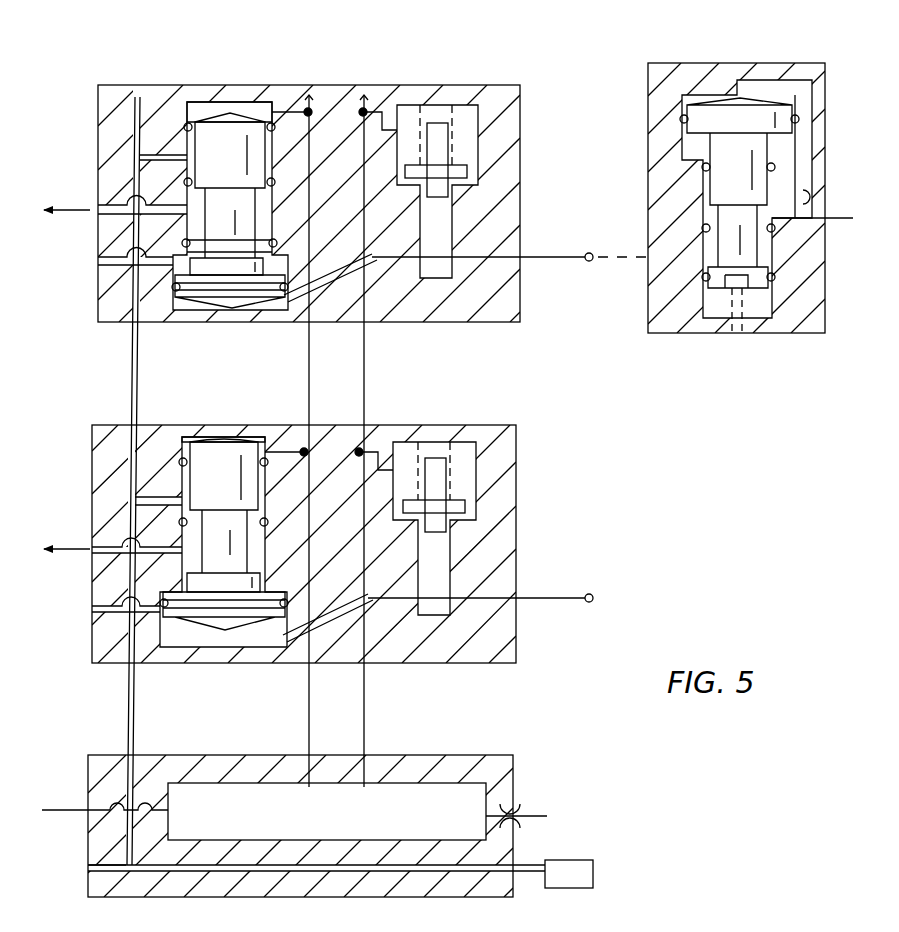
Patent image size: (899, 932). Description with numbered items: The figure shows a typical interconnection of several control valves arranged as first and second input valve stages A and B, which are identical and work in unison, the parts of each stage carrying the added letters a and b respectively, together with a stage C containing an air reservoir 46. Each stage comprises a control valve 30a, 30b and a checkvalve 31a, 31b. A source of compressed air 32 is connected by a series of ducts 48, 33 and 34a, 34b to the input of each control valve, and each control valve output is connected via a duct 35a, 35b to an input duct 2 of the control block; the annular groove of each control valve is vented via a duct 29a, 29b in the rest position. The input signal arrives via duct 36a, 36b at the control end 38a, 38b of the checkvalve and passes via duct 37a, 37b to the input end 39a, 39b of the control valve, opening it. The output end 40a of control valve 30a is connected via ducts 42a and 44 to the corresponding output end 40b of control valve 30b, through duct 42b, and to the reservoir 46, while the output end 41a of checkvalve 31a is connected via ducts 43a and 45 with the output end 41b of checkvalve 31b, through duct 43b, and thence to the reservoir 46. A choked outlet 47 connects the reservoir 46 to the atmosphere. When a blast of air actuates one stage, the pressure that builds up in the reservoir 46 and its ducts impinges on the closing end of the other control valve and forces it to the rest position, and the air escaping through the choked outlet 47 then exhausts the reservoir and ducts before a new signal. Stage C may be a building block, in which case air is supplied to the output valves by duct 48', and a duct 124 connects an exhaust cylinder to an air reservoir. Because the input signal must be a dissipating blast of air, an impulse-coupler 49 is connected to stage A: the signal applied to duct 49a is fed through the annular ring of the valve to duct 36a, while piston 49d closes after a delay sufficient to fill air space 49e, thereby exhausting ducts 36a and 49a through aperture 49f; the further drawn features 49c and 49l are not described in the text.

The input duct 2 is at (80, 208).
The vent duct 29a is at (102, 266).
The vent duct 29b is at (100, 611).
The control valve 30a is at (214, 192).
The control valve 30b is at (220, 540).
The checkvalve 31a is at (450, 192).
The checkvalve 31b is at (447, 534).
The source of compressed air 32 is at (565, 860).
The duct 33 is at (134, 118).
The duct 34a is at (168, 152).
The duct 34b is at (165, 495).
The output duct 35a is at (160, 205).
The output duct 35b is at (158, 545).
The input signal duct 36a is at (560, 258).
The input signal duct 36b is at (552, 598).
The duct 37a is at (320, 300).
The duct 37b is at (318, 655).
The control end of checkvalve 38a is at (432, 278).
The control end of checkvalve 38b is at (432, 655).
The input end of control valve 39a is at (190, 308).
The opening end of control valve 39b is at (188, 648).
The output end of control valve 40a is at (208, 105).
The output end of control valve 40b is at (232, 442).
The output end of checkvalve 41a is at (470, 120).
The output end of checkvalve 41b is at (470, 455).
The duct 42a is at (262, 110).
The duct 42b is at (283, 420).
The duct 43a is at (382, 112).
The duct 43b is at (378, 450).
The duct 44 is at (312, 140).
The duct 45 is at (360, 140).
The air reservoir 46 is at (327, 811).
The choked outlet 47 is at (498, 812).
The duct 48 is at (316, 894).
The duct 48' is at (76, 880).
The impulse-coupler 49 is at (759, 192).
The duct 49a is at (840, 218).
The port 49c is at (809, 198).
The piston 49d is at (760, 110).
The air space 49e is at (692, 100).
The aperture 49f is at (737, 333).
The bore 49l is at (812, 100).
The duct 124 is at (100, 805).
The first input valve stage A is at (98, 85).
The second input valve stage B is at (92, 425).
The stage C is at (88, 755).
The suffix letter for stage A a is at (587, 253).
The suffix letter for stage B b is at (591, 605).